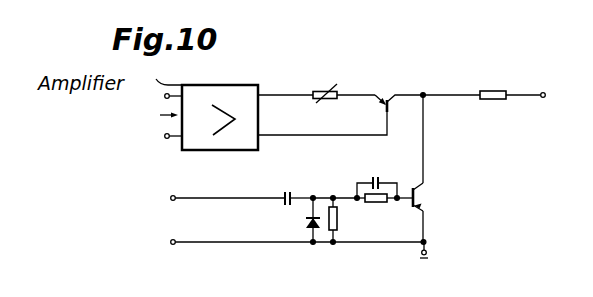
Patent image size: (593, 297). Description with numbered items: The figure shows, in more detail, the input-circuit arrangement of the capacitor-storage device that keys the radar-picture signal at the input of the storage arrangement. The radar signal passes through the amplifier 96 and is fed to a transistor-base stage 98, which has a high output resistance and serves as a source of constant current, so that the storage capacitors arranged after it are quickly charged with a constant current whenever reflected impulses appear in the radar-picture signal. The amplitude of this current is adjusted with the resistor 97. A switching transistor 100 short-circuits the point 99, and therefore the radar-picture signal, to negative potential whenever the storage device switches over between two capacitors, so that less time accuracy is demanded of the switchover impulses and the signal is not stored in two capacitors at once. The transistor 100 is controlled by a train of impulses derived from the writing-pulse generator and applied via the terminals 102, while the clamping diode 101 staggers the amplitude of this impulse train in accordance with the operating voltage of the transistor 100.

The amplifier 96 is at (209, 109).
The resistor 97 is at (316, 87).
The transistor-base stage 98 is at (340, 115).
The point 99 is at (497, 95).
The switching transistor 100 is at (427, 220).
The clamping diode 101 is at (300, 220).
The terminals 102 is at (292, 218).